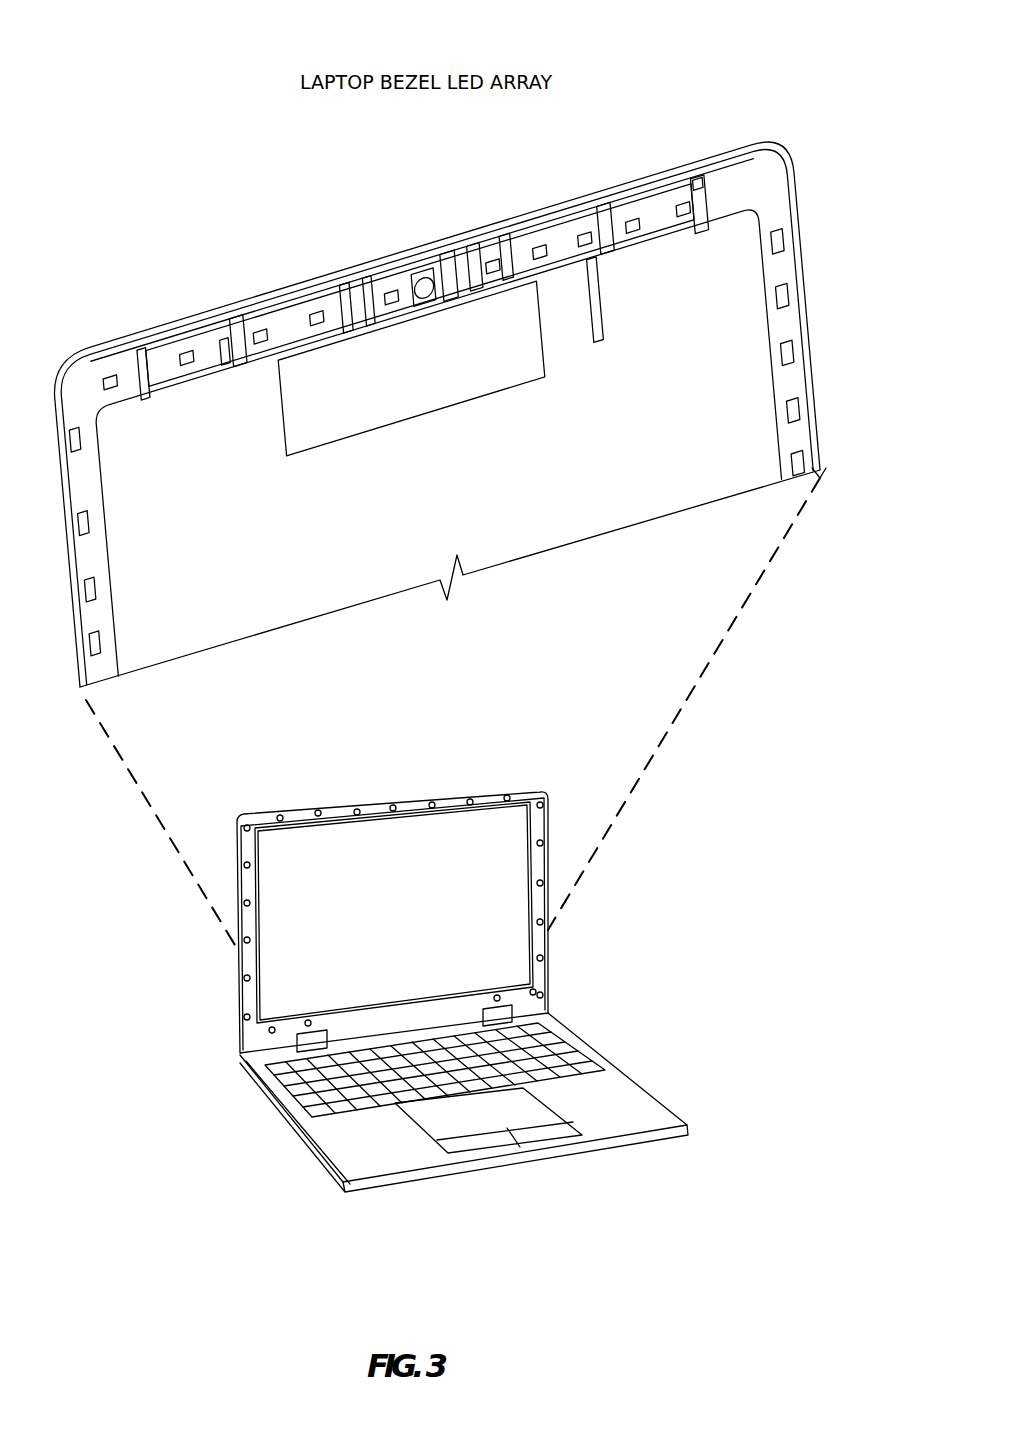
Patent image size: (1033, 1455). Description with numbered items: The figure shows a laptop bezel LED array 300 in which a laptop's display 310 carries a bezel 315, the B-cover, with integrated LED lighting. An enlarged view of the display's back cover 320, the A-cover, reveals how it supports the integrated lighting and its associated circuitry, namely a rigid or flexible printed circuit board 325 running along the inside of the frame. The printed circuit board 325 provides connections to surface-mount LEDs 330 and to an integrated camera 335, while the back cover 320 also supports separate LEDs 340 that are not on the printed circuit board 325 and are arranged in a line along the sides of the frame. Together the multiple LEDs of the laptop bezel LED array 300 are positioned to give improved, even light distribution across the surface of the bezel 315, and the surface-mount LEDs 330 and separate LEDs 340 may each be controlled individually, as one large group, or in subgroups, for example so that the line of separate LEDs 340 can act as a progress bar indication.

The laptop bezel LED array 300 is at (780, 33).
The display 310 is at (268, 808).
The bezel 315 is at (343, 812).
The back cover 320 is at (435, 414).
The printed circuit board 325 is at (426, 326).
The surface-mount LEDs 330 is at (357, 304).
The integrated camera 335 is at (423, 287).
The separate LEDs 340 is at (397, 296).